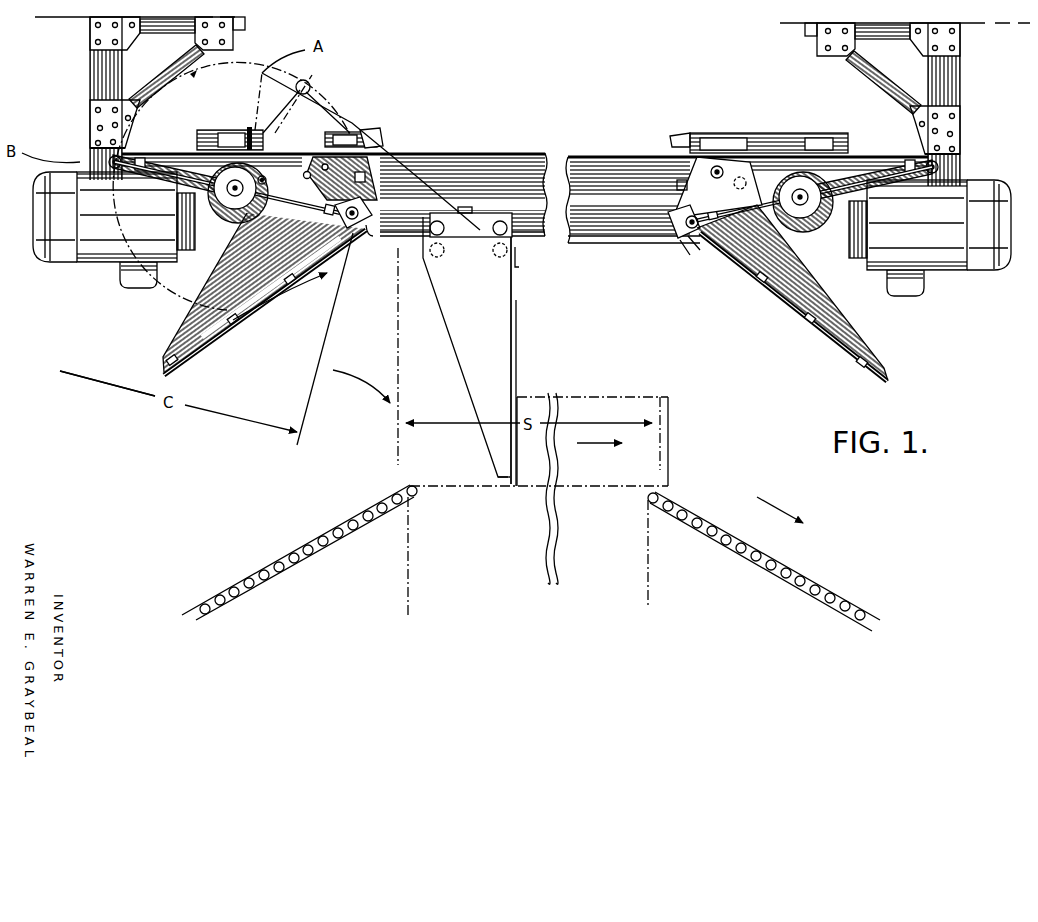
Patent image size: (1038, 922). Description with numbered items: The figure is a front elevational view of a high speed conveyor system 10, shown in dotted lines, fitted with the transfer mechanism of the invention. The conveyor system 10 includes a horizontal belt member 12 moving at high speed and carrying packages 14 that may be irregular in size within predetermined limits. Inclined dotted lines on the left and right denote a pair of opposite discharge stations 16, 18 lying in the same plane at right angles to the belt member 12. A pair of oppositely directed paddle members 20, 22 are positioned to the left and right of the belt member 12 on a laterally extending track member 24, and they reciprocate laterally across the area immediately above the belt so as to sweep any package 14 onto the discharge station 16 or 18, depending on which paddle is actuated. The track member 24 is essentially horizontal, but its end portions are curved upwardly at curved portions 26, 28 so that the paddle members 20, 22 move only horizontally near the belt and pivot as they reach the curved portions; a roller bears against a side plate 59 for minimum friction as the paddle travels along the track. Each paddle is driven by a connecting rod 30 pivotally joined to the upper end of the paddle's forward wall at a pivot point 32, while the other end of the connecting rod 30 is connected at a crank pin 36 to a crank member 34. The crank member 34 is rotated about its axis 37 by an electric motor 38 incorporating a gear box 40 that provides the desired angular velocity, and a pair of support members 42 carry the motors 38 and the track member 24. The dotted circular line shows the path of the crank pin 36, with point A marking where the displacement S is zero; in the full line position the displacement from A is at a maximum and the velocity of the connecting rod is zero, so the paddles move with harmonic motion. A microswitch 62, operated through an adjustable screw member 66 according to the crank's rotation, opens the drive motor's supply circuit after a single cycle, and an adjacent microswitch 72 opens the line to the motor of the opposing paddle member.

The high speed conveyor system 10 is at (411, 572).
The horizontal belt member 12 is at (485, 488).
The packages 14 is at (607, 403).
The discharge station 16 is at (302, 545).
The discharge station 18 is at (795, 573).
The paddle member 20 is at (254, 332).
The paddle member 22 is at (737, 320).
The track member 24 is at (598, 246).
The curved portion 26 is at (320, 188).
The curved portion 28 is at (728, 198).
The connecting rod 30 is at (174, 155).
The pivot point 32 is at (370, 213).
The crank member 34 is at (175, 192).
The crank pin 36 is at (108, 158).
The axis 37 is at (226, 200).
The electric motor 38 is at (58, 258).
The gear box 40 is at (265, 237).
The support member 42 is at (90, 80).
The side plate 59 is at (473, 190).
The microswitch 62 is at (228, 130).
The adjustable screw member 66 is at (266, 180).
The microswitch 72 is at (352, 130).